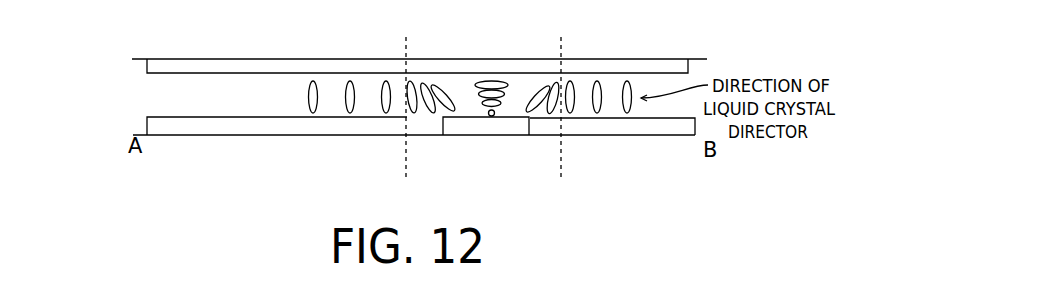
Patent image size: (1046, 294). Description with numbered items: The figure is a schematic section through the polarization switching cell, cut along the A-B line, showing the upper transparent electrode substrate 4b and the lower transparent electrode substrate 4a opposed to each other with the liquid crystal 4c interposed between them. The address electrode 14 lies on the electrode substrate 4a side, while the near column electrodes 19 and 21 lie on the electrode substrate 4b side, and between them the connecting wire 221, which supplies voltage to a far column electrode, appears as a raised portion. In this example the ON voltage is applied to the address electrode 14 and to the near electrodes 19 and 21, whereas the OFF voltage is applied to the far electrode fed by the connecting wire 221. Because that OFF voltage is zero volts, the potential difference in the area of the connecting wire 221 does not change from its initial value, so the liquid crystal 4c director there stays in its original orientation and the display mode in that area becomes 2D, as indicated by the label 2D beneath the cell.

The electrode substrate 4b is at (142, 66).
The liquid crystal 4c is at (107, 91).
The electrode substrate 4a is at (112, 128).
The address electrode 14 is at (418, 58).
The column electrode 19 is at (293, 135).
The connecting wire 221 is at (482, 135).
The column electrode 21 is at (653, 135).
The 2D display mode 2D is at (200, 168).